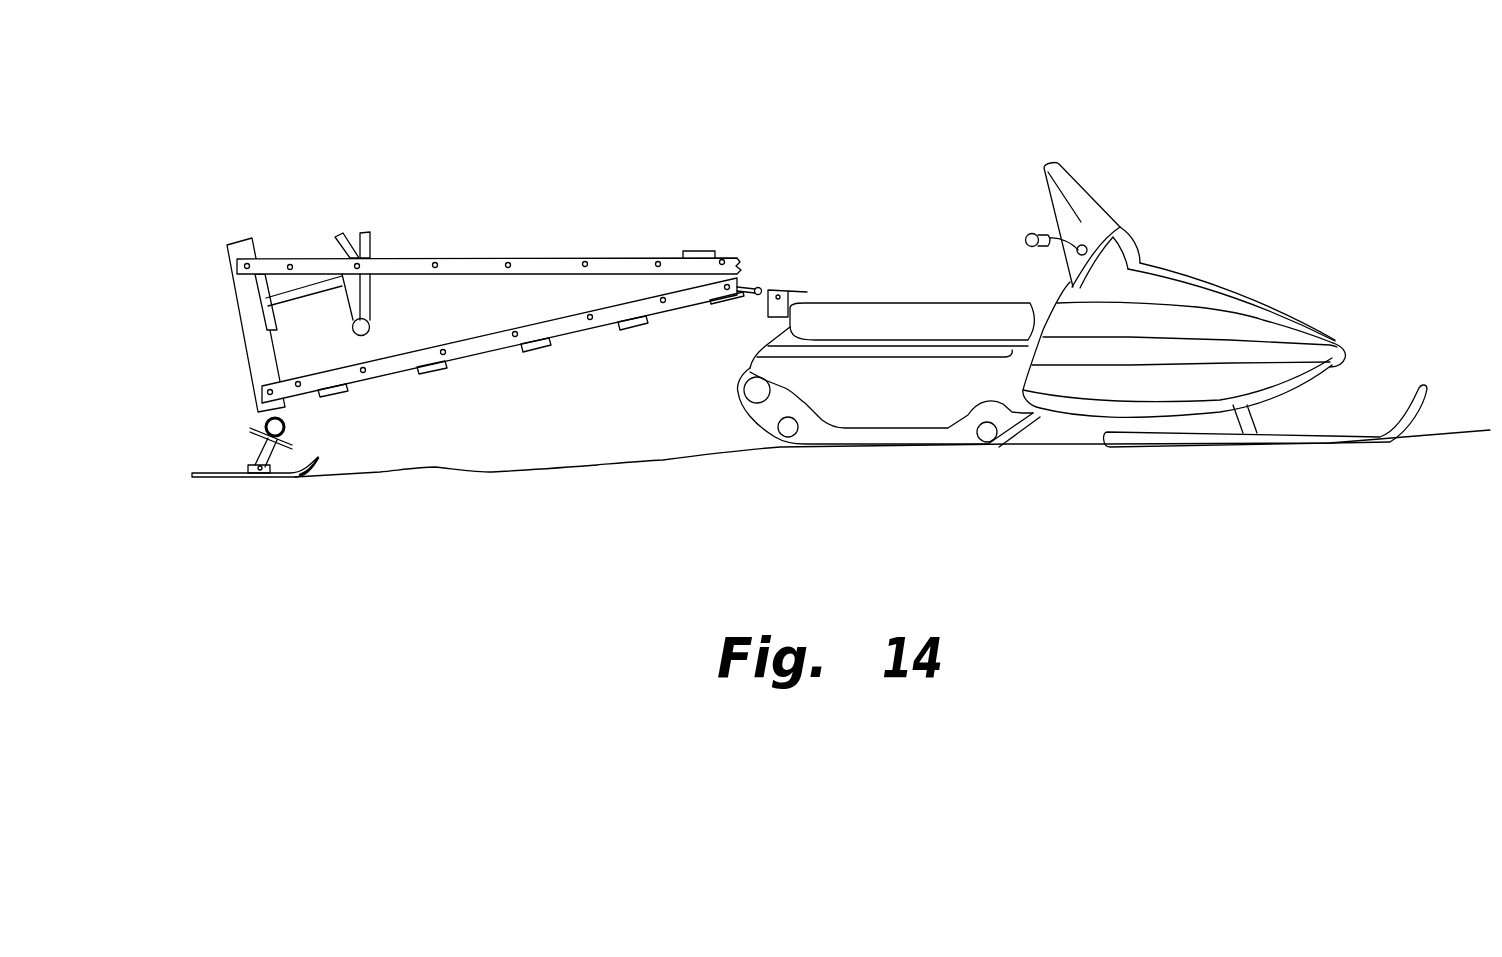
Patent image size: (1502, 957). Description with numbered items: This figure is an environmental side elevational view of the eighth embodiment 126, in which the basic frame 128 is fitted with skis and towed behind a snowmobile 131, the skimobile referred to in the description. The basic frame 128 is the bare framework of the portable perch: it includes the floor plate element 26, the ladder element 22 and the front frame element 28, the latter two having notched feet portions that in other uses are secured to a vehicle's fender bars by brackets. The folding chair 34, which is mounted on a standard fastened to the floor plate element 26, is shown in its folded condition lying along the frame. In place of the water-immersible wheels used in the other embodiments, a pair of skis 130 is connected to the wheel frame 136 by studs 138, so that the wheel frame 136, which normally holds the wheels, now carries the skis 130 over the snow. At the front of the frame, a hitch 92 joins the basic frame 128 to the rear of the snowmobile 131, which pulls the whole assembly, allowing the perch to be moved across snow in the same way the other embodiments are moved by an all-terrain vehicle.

The ladder element 22 is at (533, 326).
The floor plate element 26 is at (257, 327).
The front frame element 28 is at (455, 268).
The folding chair 34 is at (337, 257).
The hitch 92 is at (751, 285).
The eighth embodiment 126 is at (545, 130).
The basic frame 128 is at (533, 228).
The skis 130 is at (222, 476).
The snowmobile 131 is at (1128, 146).
The wheel frame 136 is at (282, 457).
The studs 138 is at (267, 474).